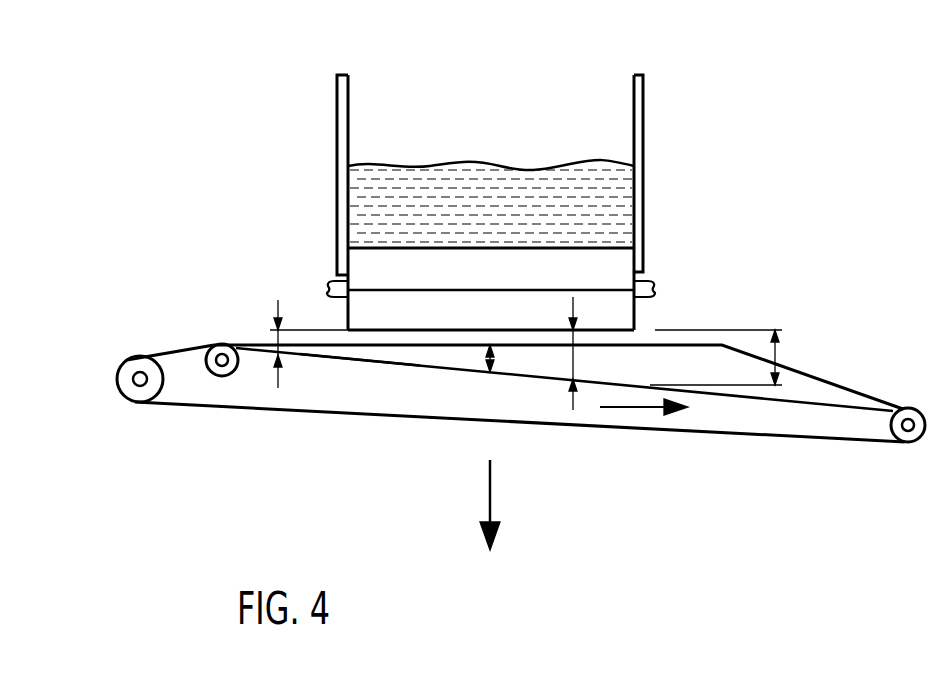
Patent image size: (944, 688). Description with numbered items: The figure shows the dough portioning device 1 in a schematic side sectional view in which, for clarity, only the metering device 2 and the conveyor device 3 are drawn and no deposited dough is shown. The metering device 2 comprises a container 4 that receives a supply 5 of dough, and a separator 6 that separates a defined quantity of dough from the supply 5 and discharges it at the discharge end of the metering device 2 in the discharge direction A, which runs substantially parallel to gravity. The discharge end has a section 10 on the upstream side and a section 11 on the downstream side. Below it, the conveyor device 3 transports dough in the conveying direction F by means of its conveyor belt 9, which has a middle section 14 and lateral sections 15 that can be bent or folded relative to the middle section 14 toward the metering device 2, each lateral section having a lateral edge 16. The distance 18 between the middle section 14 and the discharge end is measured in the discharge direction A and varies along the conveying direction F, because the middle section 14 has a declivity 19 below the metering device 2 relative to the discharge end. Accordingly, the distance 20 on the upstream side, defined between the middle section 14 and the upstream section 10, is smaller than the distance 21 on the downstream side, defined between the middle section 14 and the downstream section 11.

The dough portioning device 1 is at (879, 45).
The metering device 2 is at (291, 157).
The conveyor device 3 is at (278, 441).
The container 4 is at (641, 97).
The supply of dough 5 is at (380, 172).
The separator 6 is at (651, 272).
The conveyor belt 9 is at (188, 406).
The section on the upstream side 10 is at (336, 323).
The section on the downstream side 11 is at (653, 313).
The middle section 14 is at (440, 367).
The lateral sections 15 is at (818, 383).
The lateral edge 16 is at (365, 348).
The distance 18 is at (500, 352).
The declivity 19 is at (580, 354).
The distance on the upstream side 20 is at (278, 333).
The distance on the downstream side 21 is at (782, 350).
The discharge direction A is at (489, 488).
The conveying direction F is at (630, 409).